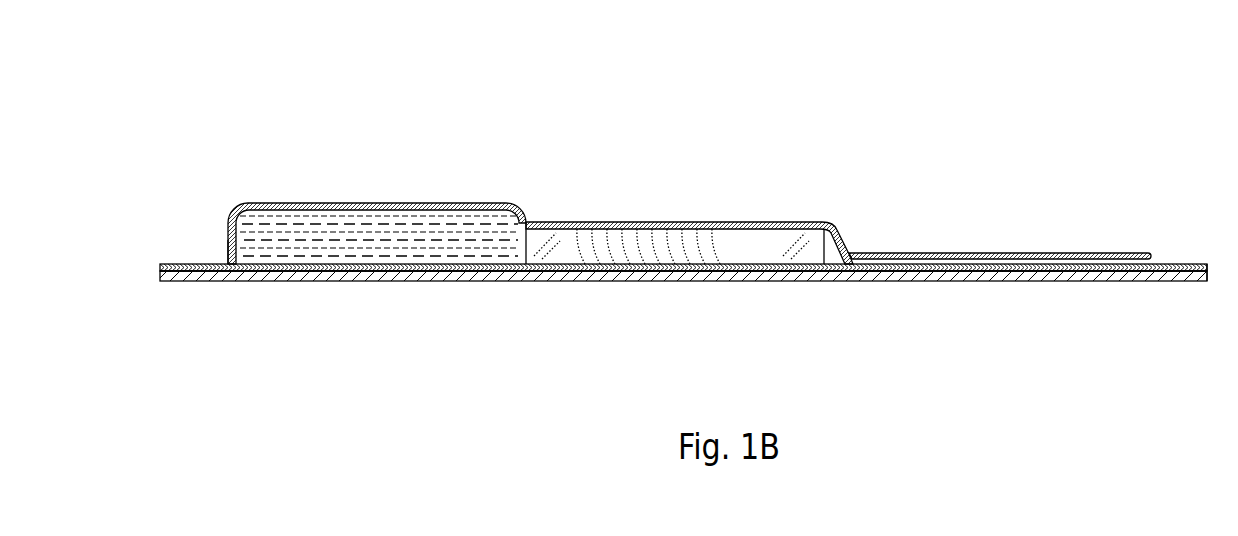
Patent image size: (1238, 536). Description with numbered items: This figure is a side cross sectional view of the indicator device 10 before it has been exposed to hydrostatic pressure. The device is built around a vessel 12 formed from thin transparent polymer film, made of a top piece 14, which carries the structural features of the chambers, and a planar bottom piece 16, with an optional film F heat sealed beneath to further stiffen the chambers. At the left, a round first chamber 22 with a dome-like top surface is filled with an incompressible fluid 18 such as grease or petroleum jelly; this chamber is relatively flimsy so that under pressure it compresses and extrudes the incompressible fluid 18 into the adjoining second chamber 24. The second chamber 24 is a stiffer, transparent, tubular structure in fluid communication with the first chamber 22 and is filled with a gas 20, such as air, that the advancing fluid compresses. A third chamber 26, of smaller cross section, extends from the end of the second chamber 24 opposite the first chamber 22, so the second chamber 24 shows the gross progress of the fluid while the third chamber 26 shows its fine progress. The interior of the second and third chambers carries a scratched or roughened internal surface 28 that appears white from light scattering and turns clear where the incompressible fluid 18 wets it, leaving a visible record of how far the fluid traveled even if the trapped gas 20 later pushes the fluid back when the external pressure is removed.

The indicator device 10 is at (227, 117).
The vessel 12 is at (527, 197).
The top piece 14 is at (228, 241).
The bottom piece 16 is at (1202, 262).
The incompressible fluid 18 is at (282, 222).
The gas 20 is at (1008, 260).
The first chamber 22 is at (378, 203).
The second chamber 24 is at (613, 222).
The third chamber 26 is at (933, 252).
The roughened internal surface 28 is at (710, 247).
The film F is at (1208, 281).